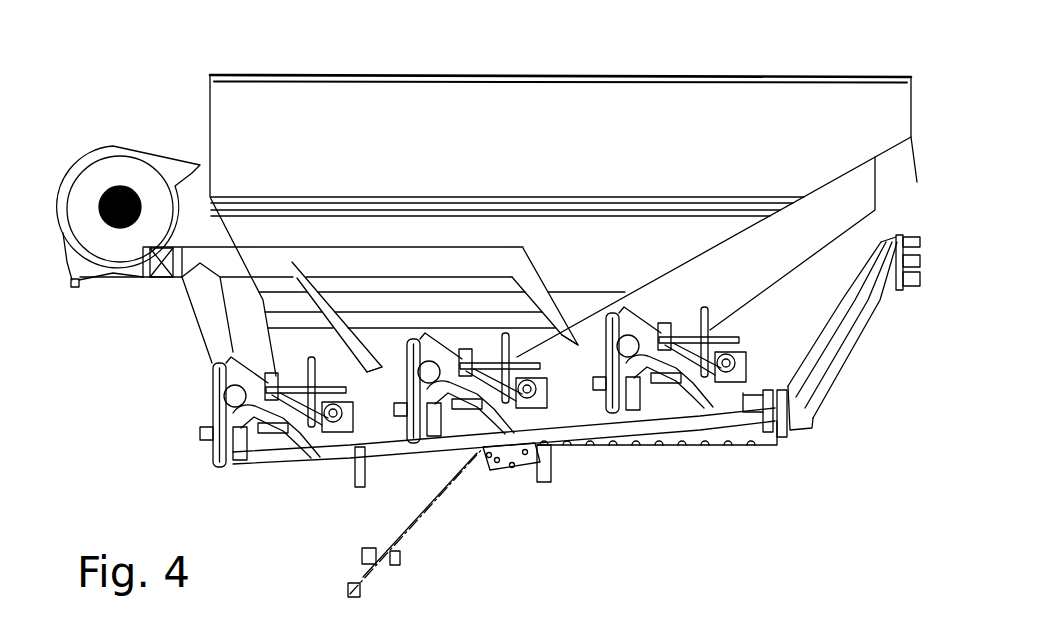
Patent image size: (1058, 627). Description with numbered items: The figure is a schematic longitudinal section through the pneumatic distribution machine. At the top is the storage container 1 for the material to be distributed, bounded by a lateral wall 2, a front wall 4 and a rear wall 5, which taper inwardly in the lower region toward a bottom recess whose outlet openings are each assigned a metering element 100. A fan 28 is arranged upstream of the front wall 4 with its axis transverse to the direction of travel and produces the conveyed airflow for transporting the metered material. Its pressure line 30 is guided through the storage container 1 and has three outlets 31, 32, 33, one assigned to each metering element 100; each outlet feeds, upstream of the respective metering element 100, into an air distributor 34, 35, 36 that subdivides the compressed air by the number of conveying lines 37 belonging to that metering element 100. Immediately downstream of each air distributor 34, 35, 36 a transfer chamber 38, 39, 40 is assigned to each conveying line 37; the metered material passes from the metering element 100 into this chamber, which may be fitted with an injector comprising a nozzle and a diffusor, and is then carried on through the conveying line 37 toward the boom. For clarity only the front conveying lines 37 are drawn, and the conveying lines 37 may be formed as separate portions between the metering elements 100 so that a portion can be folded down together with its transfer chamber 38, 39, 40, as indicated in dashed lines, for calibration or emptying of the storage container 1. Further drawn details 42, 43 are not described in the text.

The storage container 1 is at (540, 74).
The lateral wall 2 is at (432, 115).
The front wall 4 is at (212, 115).
The rear wall 5 is at (917, 182).
The fan 28 is at (107, 152).
The pressure line 30 is at (328, 258).
The outlet 31 is at (210, 310).
The outlet 32 is at (343, 313).
The outlet 33 is at (548, 292).
The air distributor 34 is at (260, 443).
The air distributor 35 is at (455, 417).
The air distributor 36 is at (650, 397).
The conveying line 37 is at (413, 523).
The transfer chamber 38 is at (347, 500).
The transfer chamber 39 is at (538, 458).
The transfer chamber 40 is at (743, 438).
The pivot joint 42 is at (365, 363).
The pivot joint 43 is at (560, 335).
The metering element 100 is at (333, 420).